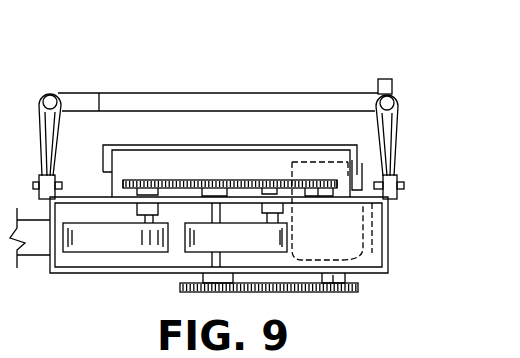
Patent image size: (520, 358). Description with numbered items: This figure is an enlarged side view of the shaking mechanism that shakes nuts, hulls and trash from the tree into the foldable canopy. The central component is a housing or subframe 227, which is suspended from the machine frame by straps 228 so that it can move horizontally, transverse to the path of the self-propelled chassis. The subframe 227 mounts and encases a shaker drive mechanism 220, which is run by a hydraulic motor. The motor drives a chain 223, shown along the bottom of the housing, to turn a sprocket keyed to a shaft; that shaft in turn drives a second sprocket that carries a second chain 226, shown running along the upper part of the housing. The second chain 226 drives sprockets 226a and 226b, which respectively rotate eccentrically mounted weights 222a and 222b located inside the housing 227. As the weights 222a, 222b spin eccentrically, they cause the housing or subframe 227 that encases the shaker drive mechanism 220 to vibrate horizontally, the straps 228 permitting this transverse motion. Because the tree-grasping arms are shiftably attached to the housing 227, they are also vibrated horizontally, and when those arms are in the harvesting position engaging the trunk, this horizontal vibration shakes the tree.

The shaker drive mechanism 220 is at (211, 88).
The straps 228 is at (38, 133).
The housing or subframe 227 is at (388, 250).
The second chain 226 is at (306, 176).
The sprocket 226a is at (277, 178).
The sprocket 226b is at (133, 192).
The eccentrically mounted weight 222a is at (262, 247).
The eccentrically mounted weight 222b is at (108, 242).
The chain 223 is at (303, 292).